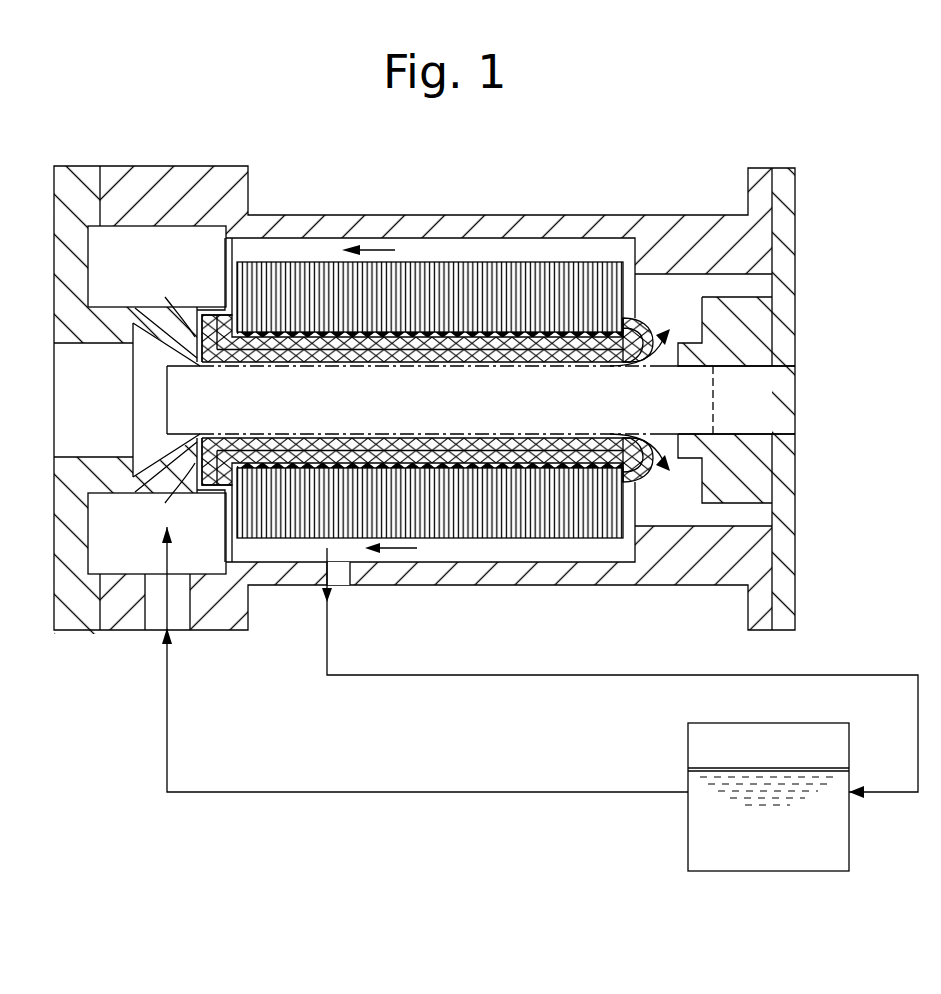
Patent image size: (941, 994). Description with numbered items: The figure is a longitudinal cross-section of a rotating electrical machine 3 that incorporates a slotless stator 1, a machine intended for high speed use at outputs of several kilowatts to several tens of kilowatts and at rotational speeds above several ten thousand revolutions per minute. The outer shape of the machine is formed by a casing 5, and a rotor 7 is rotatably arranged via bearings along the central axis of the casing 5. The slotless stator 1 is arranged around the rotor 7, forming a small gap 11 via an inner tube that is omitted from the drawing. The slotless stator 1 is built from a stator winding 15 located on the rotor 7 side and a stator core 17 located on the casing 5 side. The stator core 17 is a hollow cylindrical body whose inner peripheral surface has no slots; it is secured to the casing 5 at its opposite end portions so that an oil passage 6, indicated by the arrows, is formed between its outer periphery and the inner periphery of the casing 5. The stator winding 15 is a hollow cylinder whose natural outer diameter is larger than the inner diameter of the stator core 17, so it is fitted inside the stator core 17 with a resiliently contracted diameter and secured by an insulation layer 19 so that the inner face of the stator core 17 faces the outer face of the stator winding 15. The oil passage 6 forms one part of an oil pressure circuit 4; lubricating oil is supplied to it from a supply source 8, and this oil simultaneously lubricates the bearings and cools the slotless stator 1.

The slotless stator 1 is at (563, 177).
The rotating electrical machine 3 is at (464, 184).
The oil pressure circuit 4 is at (856, 666).
The casing 5 is at (218, 183).
The oil passage 6 is at (298, 247).
The rotor 7 is at (703, 410).
The supply source 8 is at (845, 840).
The gap 11 is at (583, 433).
The stator winding 15 is at (637, 323).
The stator core 17 is at (585, 270).
The insulation layer 19 is at (592, 468).